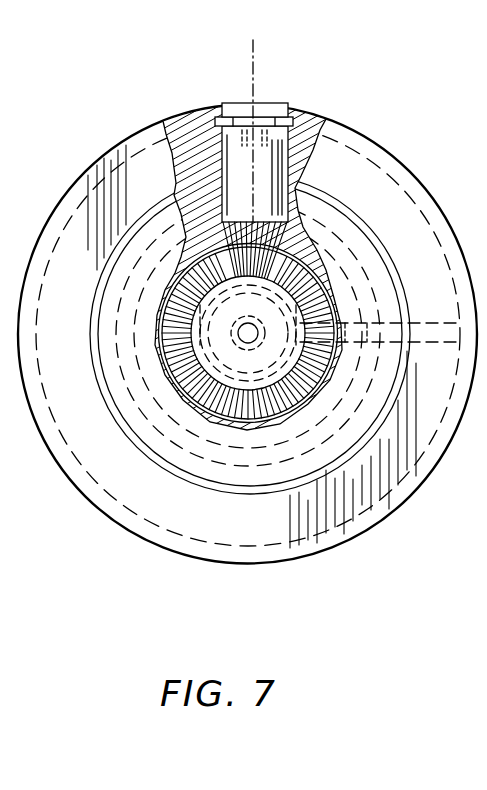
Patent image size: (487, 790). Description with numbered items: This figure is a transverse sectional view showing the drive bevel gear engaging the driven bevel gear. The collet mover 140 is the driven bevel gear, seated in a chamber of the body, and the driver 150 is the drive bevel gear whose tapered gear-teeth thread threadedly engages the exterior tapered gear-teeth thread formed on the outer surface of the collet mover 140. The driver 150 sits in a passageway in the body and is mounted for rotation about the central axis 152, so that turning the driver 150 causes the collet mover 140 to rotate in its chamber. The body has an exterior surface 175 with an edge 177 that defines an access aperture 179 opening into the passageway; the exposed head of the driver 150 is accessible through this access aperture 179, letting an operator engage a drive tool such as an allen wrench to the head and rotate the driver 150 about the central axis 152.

The exterior surface 175 is at (78, 190).
The driver 150 is at (255, 175).
The edge 177 is at (223, 116).
The central axis 152 is at (255, 48).
The access aperture 179 is at (280, 99).
The collet mover 140 is at (308, 290).